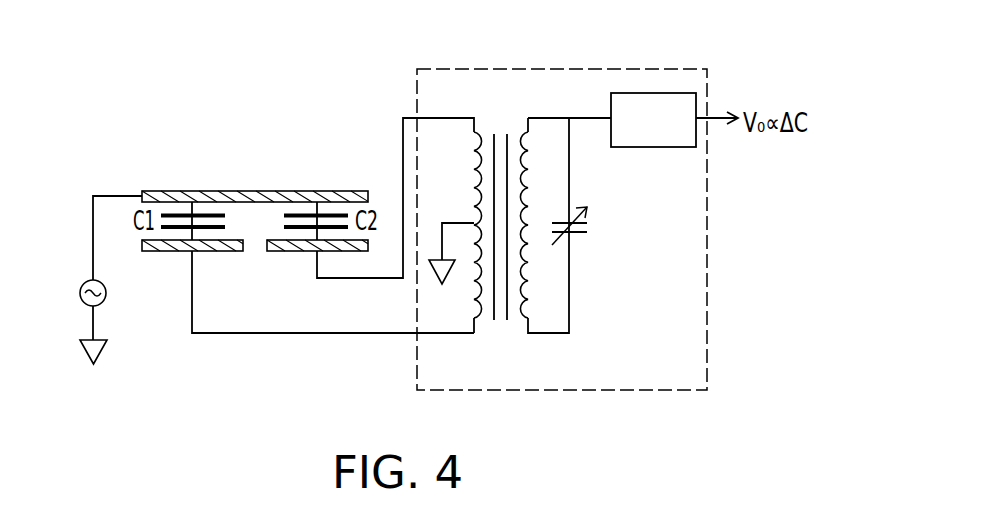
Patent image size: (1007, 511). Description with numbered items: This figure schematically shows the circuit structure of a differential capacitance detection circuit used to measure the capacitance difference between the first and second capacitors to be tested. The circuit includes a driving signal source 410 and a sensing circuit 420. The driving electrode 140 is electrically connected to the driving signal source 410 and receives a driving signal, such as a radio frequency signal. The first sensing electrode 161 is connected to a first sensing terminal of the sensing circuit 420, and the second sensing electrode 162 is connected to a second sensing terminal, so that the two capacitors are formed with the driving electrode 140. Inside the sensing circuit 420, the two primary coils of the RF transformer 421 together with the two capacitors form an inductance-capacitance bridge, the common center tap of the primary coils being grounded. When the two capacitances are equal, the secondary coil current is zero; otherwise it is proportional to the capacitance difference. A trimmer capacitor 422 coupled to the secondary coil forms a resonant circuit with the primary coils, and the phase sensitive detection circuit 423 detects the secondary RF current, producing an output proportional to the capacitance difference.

The driving electrode 140 is at (262, 190).
The first sensing electrode 161 is at (162, 253).
The second sensing electrode 162 is at (293, 253).
The driving signal source 410 is at (82, 302).
The sensing circuit 420 is at (582, 392).
The RF transformer 421 is at (500, 120).
The trimmer capacitor 422 is at (582, 248).
The phase sensitive detection circuit 423 is at (648, 92).